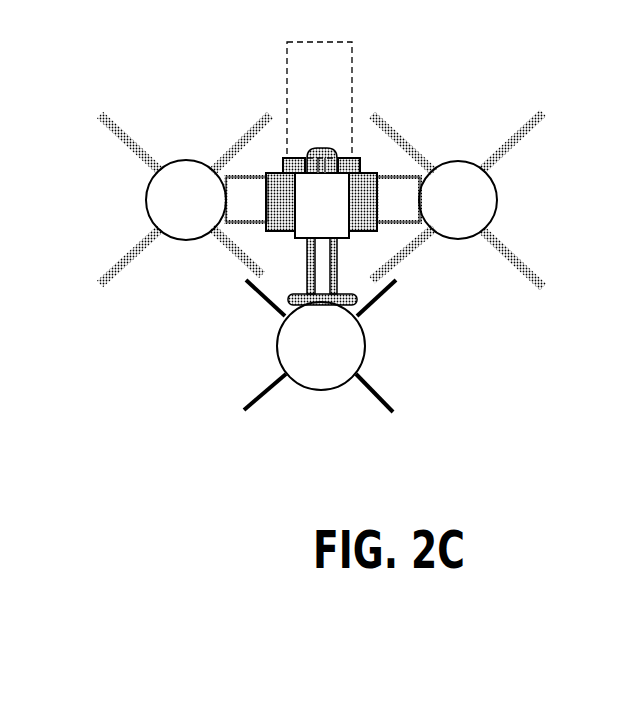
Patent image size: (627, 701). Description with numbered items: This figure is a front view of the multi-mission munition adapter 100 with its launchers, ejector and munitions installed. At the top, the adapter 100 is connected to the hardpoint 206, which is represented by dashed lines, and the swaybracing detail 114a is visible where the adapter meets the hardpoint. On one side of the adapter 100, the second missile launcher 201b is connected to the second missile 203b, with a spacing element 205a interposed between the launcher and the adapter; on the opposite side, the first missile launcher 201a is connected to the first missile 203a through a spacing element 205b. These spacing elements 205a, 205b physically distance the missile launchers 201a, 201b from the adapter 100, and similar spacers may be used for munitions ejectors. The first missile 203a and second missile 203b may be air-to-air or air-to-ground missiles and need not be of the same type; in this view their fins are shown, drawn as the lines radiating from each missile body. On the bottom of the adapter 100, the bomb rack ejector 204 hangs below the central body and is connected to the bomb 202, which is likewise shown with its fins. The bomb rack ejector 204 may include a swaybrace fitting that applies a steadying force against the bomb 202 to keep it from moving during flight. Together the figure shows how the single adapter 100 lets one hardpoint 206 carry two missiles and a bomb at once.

The multi-mission munition adapter 100 is at (323, 154).
The swaybracing detail 114a is at (336, 158).
The first missile launcher 201a is at (383, 178).
The second missile launcher 201b is at (236, 176).
The bomb 202 is at (300, 386).
The first missile 203a is at (498, 200).
The second missile 203b is at (146, 202).
The bomb rack ejector 204 is at (340, 278).
The spacing element 205a is at (270, 246).
The spacing element 205b is at (378, 233).
The hardpoint 206 is at (312, 42).